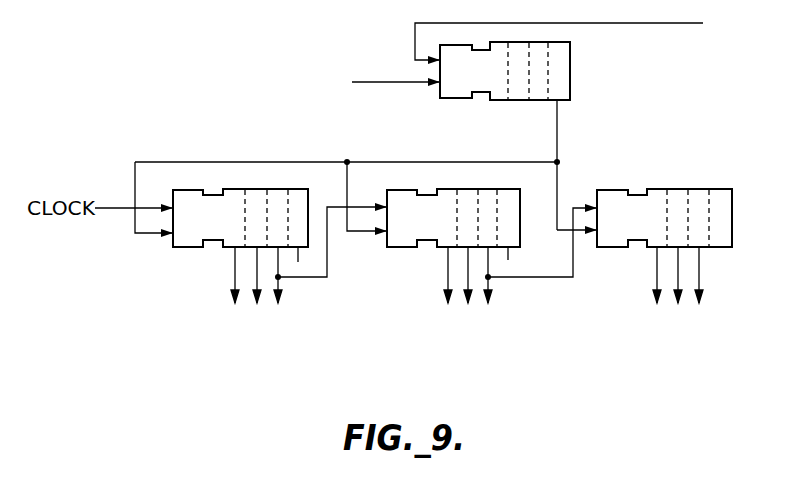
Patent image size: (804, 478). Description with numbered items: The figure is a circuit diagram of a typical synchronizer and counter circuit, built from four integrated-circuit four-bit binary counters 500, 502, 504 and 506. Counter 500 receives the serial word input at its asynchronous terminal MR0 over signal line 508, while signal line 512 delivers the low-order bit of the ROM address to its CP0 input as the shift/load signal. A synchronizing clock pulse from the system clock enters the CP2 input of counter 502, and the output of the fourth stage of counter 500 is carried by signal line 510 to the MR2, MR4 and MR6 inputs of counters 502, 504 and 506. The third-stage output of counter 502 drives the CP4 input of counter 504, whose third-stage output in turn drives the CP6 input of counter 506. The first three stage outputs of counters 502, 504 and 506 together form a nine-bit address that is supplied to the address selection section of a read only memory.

The four-bit binary counter 500 is at (572, 50).
The four-bit binary counter 502 is at (275, 189).
The four-bit binary counter 504 is at (508, 173).
The four-bit binary counter 506 is at (708, 173).
The signal line 508 is at (400, 82).
The signal line 510 is at (557, 162).
The signal line 512 is at (632, 23).